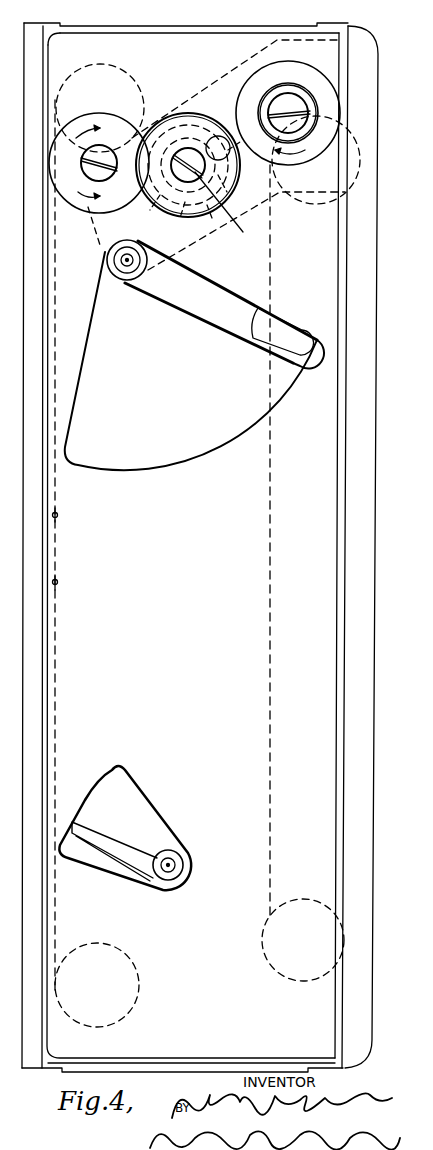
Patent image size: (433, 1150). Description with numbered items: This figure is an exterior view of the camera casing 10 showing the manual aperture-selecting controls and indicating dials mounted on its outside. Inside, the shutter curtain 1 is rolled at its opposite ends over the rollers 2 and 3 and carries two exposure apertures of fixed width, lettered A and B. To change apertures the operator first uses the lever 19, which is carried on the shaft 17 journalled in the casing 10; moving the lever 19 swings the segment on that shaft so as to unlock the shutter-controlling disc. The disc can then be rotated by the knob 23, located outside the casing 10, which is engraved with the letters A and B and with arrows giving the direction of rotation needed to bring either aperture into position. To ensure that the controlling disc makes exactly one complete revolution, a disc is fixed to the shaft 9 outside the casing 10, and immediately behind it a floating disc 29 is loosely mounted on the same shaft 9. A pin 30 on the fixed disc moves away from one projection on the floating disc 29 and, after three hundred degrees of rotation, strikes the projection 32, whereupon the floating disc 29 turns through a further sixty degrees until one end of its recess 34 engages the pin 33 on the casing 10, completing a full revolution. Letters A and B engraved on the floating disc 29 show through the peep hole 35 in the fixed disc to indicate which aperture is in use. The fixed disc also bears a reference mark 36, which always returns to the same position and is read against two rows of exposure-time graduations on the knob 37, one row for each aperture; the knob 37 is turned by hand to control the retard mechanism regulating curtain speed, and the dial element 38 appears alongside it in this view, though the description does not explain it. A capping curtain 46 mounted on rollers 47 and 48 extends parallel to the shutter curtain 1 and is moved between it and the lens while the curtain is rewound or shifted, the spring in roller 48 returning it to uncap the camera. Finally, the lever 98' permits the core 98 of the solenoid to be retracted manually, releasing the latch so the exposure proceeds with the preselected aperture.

The shutter curtain 1 is at (58, 680).
The roller 2 is at (118, 73).
The roller 3 is at (120, 952).
The shaft 9 is at (223, 212).
The casing 10 is at (98, 30).
The shaft 17 is at (118, 262).
The lever 19 is at (255, 337).
The knob 23 is at (85, 212).
The floating disc 29 is at (200, 243).
The pin 30 is at (262, 200).
The projection 32 is at (195, 113).
The pin 33 is at (149, 205).
The recess 34 is at (174, 220).
The peep hole 35 is at (217, 136).
The reference mark 36 is at (228, 165).
The knob 37 is at (308, 92).
The right dial 38 is at (253, 80).
The capping curtain 46 is at (270, 635).
The roller 47 is at (310, 206).
The roller 48 is at (283, 978).
The core 98 is at (125, 828).
The lever 98' is at (125, 828).